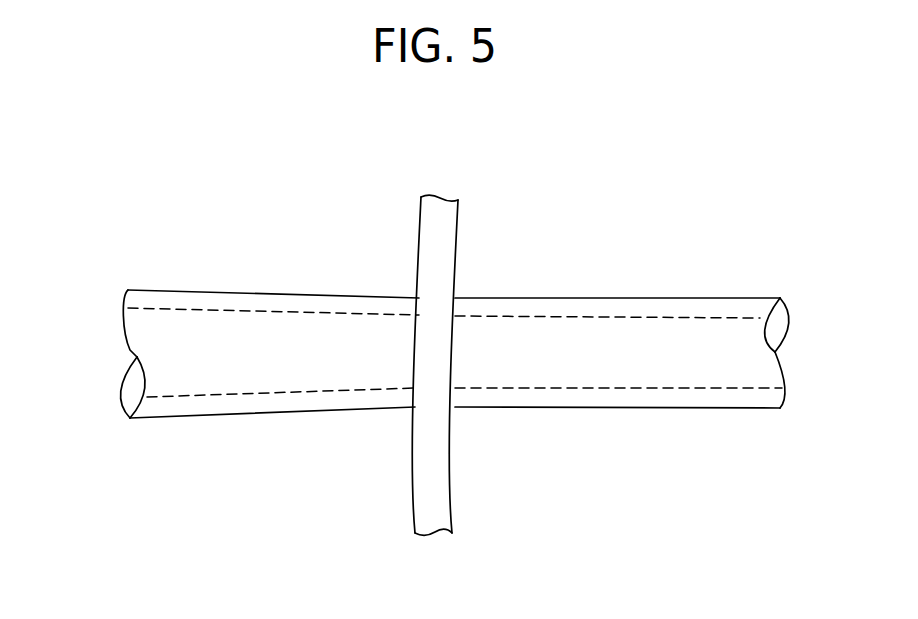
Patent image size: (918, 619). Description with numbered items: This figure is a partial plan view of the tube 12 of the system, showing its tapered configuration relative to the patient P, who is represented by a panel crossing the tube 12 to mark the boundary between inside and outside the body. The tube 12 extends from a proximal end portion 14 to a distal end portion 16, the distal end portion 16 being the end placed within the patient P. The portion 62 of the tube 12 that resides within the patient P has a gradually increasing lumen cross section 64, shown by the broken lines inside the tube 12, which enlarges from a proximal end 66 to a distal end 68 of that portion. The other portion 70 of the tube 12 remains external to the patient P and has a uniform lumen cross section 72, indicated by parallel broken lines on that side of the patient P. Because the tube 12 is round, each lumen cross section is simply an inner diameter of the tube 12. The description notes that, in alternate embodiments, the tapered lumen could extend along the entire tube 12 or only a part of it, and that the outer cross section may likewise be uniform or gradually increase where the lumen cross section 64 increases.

The tube 12 is at (449, 358).
The proximal end portion 14 is at (797, 308).
The distal end portion 16 is at (87, 373).
The portion of the tube 62 is at (265, 420).
The lumen cross section 64 is at (235, 313).
The proximal end 66 is at (390, 297).
The distal end 68 is at (141, 420).
The portion of the tube 70 is at (546, 411).
The uniform lumen cross section 72 is at (641, 388).
The patient P is at (458, 240).